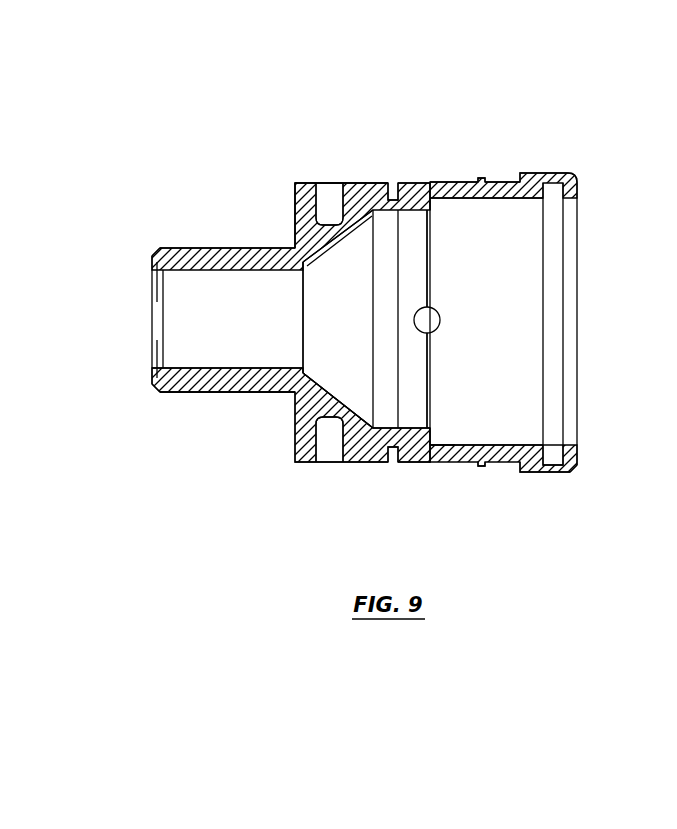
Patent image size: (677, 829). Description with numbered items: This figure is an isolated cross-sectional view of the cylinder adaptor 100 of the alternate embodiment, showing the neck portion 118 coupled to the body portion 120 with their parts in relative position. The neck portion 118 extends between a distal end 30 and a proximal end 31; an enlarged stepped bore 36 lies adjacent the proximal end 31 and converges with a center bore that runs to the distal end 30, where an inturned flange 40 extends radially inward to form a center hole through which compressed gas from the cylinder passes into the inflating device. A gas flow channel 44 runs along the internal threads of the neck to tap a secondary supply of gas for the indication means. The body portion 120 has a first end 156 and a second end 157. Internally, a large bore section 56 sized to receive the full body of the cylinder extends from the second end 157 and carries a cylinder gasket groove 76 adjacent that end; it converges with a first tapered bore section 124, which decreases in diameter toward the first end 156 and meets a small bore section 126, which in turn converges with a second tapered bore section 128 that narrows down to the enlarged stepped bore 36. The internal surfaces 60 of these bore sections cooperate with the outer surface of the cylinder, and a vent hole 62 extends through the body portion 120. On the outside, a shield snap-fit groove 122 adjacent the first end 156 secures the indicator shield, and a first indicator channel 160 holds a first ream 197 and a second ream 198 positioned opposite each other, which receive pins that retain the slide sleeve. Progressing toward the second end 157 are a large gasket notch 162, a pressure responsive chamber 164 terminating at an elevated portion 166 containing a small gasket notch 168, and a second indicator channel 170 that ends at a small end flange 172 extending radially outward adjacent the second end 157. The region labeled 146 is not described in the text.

The cylinder adaptor 100 is at (190, 133).
The neck portion 118 is at (190, 245).
The flange 146 is at (280, 243).
The shield snap-fit groove 122 is at (298, 180).
The first ream 197 is at (330, 180).
The first indicator channel 160 is at (360, 181).
The large gasket notch 162 is at (397, 181).
The pressure responsive chamber 164 is at (432, 181).
The body portion 120 is at (432, 95).
The elevated portion 166 is at (458, 176).
The small gasket notch 168 is at (478, 177).
The second indicator channel 170 is at (512, 176).
The small end flange 172 is at (573, 170).
The second end 157 is at (578, 480).
The cylinder gasket groove 76 is at (552, 445).
The large bore section 56 is at (491, 237).
The vent hole 62 is at (440, 318).
The first tapered bore section 124 is at (427, 252).
The small bore section 126 is at (373, 267).
The second tapered bore section 128 is at (323, 329).
The enlarged stepped bore 36 is at (300, 325).
The gas flow channel 44 is at (163, 272).
The inturned flange 40 is at (157, 275).
The distal end 30 is at (155, 398).
The proximal end 31 is at (273, 400).
The first end 156 is at (295, 470).
The second ream 198 is at (330, 435).
The internal surfaces 60 is at (383, 440).